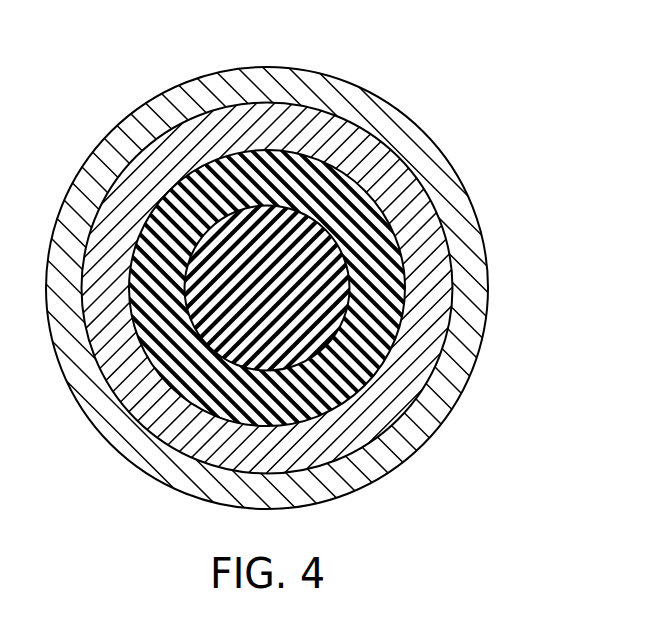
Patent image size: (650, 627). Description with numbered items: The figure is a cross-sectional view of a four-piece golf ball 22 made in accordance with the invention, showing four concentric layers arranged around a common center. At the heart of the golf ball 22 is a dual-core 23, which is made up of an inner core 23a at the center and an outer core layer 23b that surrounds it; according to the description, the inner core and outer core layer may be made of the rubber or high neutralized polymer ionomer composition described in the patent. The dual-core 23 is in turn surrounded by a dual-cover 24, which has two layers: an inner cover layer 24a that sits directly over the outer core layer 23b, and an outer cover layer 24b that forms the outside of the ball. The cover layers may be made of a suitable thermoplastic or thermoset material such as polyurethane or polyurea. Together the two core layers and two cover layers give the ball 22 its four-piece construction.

The golf ball 22 is at (325, 269).
The inner member (core and inner layer) 23 is at (306, 277).
The core 23a is at (347, 213).
The inner layer surrounding core 23b is at (338, 249).
The dual-cover 24 is at (325, 290).
The inner cover layer 24a is at (428, 282).
The outer cover layer 24b is at (472, 325).